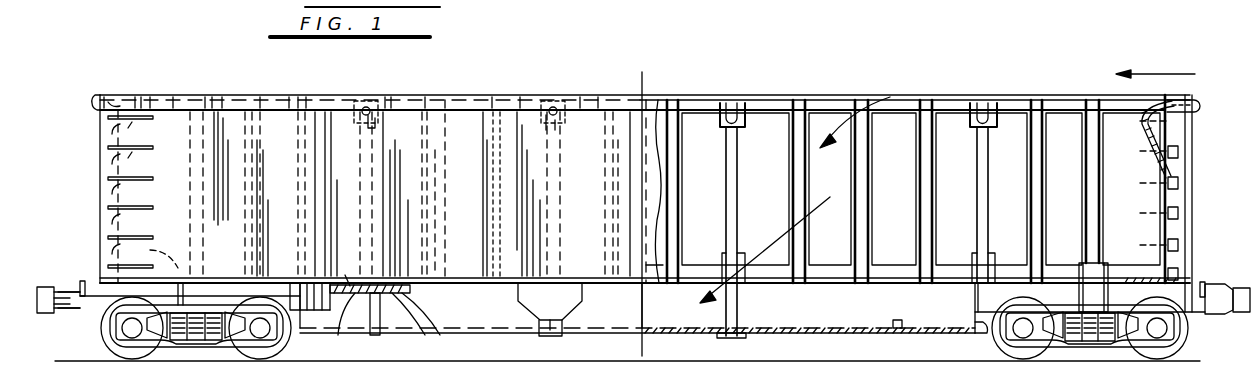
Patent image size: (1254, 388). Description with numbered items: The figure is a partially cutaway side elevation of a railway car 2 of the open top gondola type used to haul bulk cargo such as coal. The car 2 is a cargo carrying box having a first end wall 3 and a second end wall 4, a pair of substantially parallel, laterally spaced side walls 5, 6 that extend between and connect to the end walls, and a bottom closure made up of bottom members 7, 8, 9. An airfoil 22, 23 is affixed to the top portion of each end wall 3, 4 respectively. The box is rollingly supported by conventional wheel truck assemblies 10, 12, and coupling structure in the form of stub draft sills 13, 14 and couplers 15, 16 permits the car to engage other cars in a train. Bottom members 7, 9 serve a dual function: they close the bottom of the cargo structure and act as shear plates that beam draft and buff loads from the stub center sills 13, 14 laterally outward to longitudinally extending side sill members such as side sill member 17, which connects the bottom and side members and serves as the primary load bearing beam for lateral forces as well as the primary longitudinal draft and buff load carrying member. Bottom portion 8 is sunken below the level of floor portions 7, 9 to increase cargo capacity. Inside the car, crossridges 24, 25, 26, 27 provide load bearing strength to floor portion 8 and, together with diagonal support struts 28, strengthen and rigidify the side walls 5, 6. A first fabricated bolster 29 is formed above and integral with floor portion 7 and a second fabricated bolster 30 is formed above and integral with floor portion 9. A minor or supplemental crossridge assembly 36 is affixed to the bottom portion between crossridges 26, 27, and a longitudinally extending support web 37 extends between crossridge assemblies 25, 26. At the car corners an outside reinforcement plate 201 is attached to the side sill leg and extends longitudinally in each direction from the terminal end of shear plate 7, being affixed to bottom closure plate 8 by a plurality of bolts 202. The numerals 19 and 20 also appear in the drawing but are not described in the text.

The railway car 2 is at (592, 96).
The first end wall 3 is at (115, 184).
The second end wall 4 is at (1172, 196).
The side wall 5 is at (1002, 130).
The side wall 6 is at (340, 135).
The bottom member 7 is at (157, 272).
The bottom member 8 is at (816, 320).
The bottom member 9 is at (1132, 272).
The wheel truck assembly 10 is at (205, 346).
The wheel truck assembly 12 is at (1098, 346).
The stub draft sill 13 is at (92, 302).
The stub draft sill 14 is at (1193, 303).
The coupler 15 is at (72, 291).
The coupler 16 is at (1238, 288).
The side sill member 17 is at (349, 296).
The interior partition 19 is at (432, 100).
The side posts 20 is at (778, 104).
The airfoil 22 is at (115, 96).
The airfoil 23 is at (1180, 97).
The crossridge 24 is at (385, 322).
The crossridge 25 is at (552, 340).
The crossridge 26 is at (748, 300).
The crossridge 27 is at (974, 340).
The diagonal support strut 28 is at (398, 110).
The first fabricated bolster 29 is at (180, 236).
The second fabricated bolster 30 is at (1082, 266).
The supplemental crossridge assembly 36 is at (895, 328).
The support web 37 is at (683, 318).
The outside reinforcement plate 201 is at (350, 296).
The bolts 202 is at (412, 300).